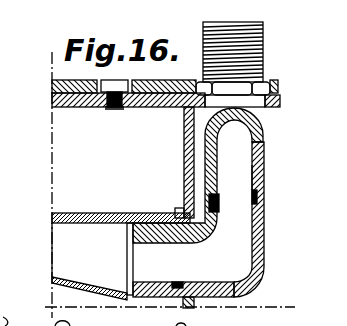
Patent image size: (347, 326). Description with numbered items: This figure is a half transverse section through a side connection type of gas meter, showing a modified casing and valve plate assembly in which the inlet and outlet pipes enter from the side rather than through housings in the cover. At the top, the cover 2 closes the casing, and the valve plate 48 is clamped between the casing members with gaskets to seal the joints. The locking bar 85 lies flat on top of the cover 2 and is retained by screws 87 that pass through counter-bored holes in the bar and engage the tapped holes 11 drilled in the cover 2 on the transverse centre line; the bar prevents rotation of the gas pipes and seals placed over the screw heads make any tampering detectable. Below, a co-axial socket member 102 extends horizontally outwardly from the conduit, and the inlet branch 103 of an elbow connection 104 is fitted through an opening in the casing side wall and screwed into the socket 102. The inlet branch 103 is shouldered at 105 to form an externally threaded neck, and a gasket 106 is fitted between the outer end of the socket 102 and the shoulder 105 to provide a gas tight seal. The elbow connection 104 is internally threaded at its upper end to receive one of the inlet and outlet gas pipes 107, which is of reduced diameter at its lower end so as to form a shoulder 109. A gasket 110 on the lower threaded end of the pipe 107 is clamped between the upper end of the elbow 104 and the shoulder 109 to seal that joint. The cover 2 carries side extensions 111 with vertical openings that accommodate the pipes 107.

The cover 2 is at (184, 160).
The tapped holes 11 is at (110, 108).
The valve plate 48 is at (89, 218).
The locking bar 85 is at (53, 82).
The screws 87 is at (123, 100).
The socket member 102 is at (127, 258).
The inlet branch 103 is at (154, 259).
The elbow connection 104 is at (264, 269).
The shoulder 105 is at (199, 284).
The gasket 106 is at (187, 308).
The inlet and outlet gas pipes 107 is at (266, 154).
The shoulder 109 is at (262, 181).
The gasket 110 is at (257, 196).
The side extensions 111 is at (283, 103).